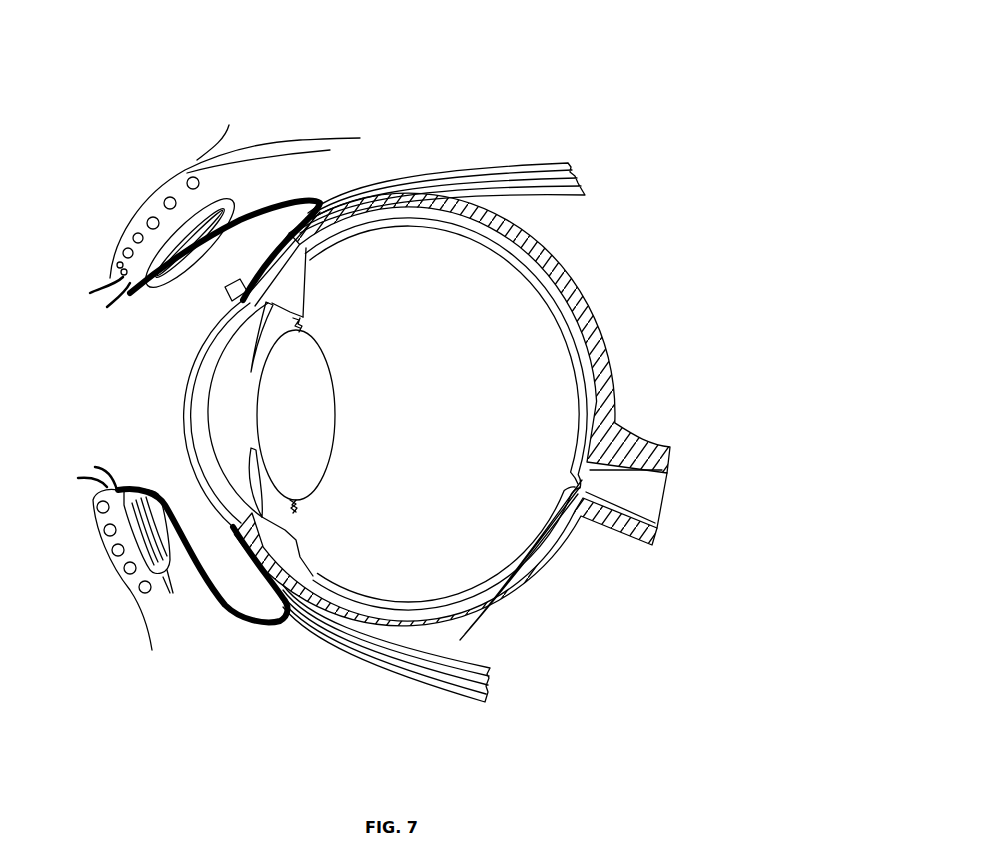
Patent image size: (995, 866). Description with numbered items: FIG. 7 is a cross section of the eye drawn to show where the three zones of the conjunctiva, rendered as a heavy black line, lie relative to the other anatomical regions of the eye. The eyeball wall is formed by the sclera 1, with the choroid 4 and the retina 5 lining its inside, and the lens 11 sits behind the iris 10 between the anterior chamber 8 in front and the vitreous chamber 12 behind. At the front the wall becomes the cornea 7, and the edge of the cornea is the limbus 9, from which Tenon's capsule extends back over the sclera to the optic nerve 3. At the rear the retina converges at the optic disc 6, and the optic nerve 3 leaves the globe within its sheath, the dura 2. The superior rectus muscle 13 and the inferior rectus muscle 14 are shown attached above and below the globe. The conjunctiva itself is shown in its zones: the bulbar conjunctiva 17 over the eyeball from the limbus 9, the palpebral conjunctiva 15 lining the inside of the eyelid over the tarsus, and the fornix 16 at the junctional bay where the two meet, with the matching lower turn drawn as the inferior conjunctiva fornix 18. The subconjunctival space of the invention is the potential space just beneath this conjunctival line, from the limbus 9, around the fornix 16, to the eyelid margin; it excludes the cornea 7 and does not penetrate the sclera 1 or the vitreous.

The sclera 1 is at (607, 352).
The dura 2 is at (638, 443).
The optic nerve 3 is at (643, 500).
The choroid 4 is at (580, 320).
The retina 5 is at (557, 300).
The optic disc 6 is at (587, 510).
The cornea 7 is at (205, 368).
The anterior chamber 8 is at (225, 408).
The limbus 9 is at (225, 289).
The iris 10 is at (247, 457).
The lens 11 is at (296, 415).
The vitreous chamber 12 is at (444, 411).
The superior rectus muscle 13 is at (568, 163).
The inferior rectus muscle 14 is at (463, 700).
The palpebral conjunctiva 15 is at (213, 230).
The fornix (forniceal conjunctiva) 16 is at (318, 203).
The bulbar conjunctiva 17 is at (273, 247).
The inferior conjunctiva fornix 18 is at (277, 623).